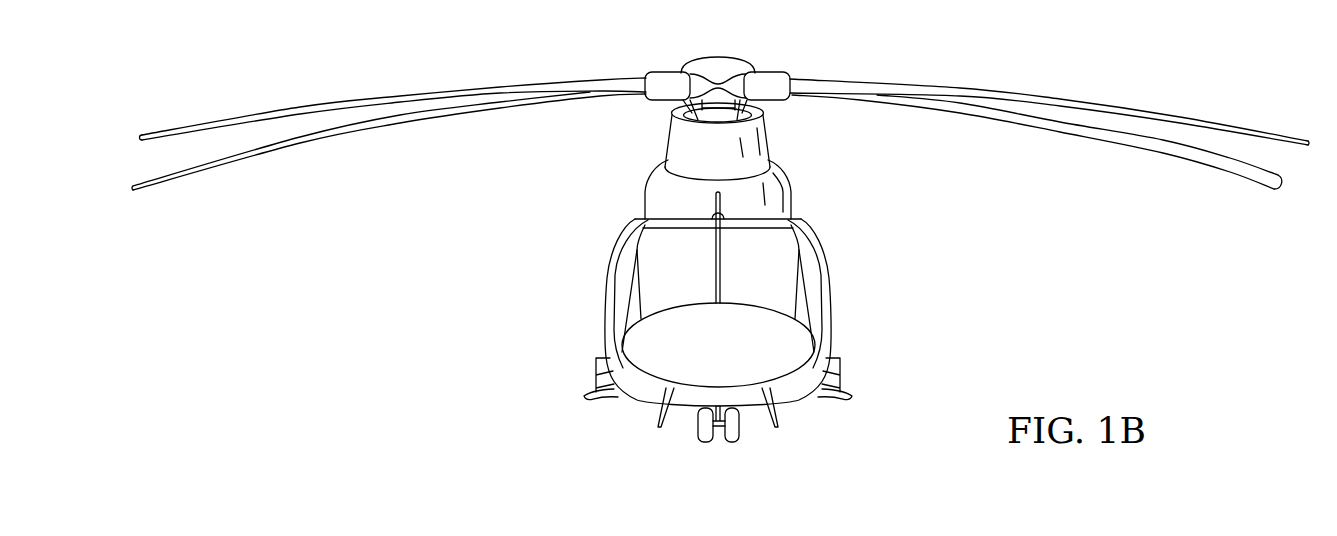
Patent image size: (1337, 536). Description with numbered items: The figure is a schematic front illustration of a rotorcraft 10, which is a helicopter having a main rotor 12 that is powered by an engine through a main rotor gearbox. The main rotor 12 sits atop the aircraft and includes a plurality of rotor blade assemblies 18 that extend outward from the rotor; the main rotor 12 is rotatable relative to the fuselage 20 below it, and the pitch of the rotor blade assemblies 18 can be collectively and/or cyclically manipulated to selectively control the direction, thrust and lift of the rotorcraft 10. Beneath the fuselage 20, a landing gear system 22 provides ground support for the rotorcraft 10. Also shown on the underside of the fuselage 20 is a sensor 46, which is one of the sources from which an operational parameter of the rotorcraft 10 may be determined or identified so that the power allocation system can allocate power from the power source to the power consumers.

The rotorcraft 10 is at (897, 262).
The main rotor 12 is at (697, 56).
The rotor blade assemblies 18 is at (1102, 103).
The fuselage 20 is at (637, 399).
The landing gear system 22 is at (698, 428).
The sensor 46 is at (779, 417).